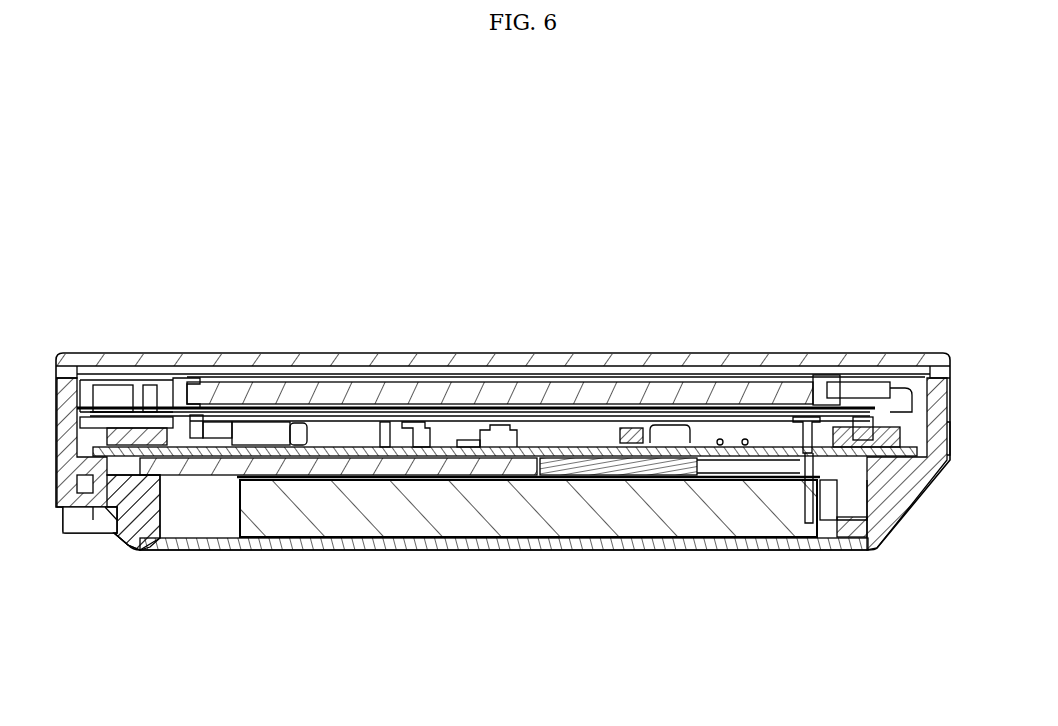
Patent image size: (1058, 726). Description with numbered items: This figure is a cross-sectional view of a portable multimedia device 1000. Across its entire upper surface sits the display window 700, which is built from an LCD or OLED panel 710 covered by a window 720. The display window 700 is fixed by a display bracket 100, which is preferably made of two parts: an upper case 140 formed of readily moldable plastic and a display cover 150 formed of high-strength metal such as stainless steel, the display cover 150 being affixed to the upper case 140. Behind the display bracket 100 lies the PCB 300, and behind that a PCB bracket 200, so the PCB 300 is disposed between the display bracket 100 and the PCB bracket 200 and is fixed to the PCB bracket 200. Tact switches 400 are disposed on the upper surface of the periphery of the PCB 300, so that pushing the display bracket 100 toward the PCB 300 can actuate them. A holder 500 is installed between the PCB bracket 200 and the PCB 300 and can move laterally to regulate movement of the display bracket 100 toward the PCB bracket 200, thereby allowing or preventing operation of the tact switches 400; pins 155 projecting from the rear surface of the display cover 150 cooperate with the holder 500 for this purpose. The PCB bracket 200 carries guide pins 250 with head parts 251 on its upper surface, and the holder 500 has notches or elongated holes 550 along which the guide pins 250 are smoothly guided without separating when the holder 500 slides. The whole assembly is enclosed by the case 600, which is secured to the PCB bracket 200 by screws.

The portable multimedia device 1000 is at (667, 190).
The display bracket 100 is at (170, 334).
The upper case 140 is at (160, 393).
The display cover 150 is at (232, 398).
The pins 155 is at (808, 456).
The PCB bracket 200 is at (160, 536).
The guide pins 250 is at (505, 375).
The head parts 251 is at (750, 453).
The PCB 300 is at (332, 405).
The tact switches 400 is at (133, 426).
The holder 500 is at (258, 540).
The notches or elongated holes 550 is at (740, 481).
The case 600 is at (890, 525).
The display window 700 is at (503, 334).
The LCD or OLED panel 710 is at (627, 388).
The window 720 is at (558, 362).